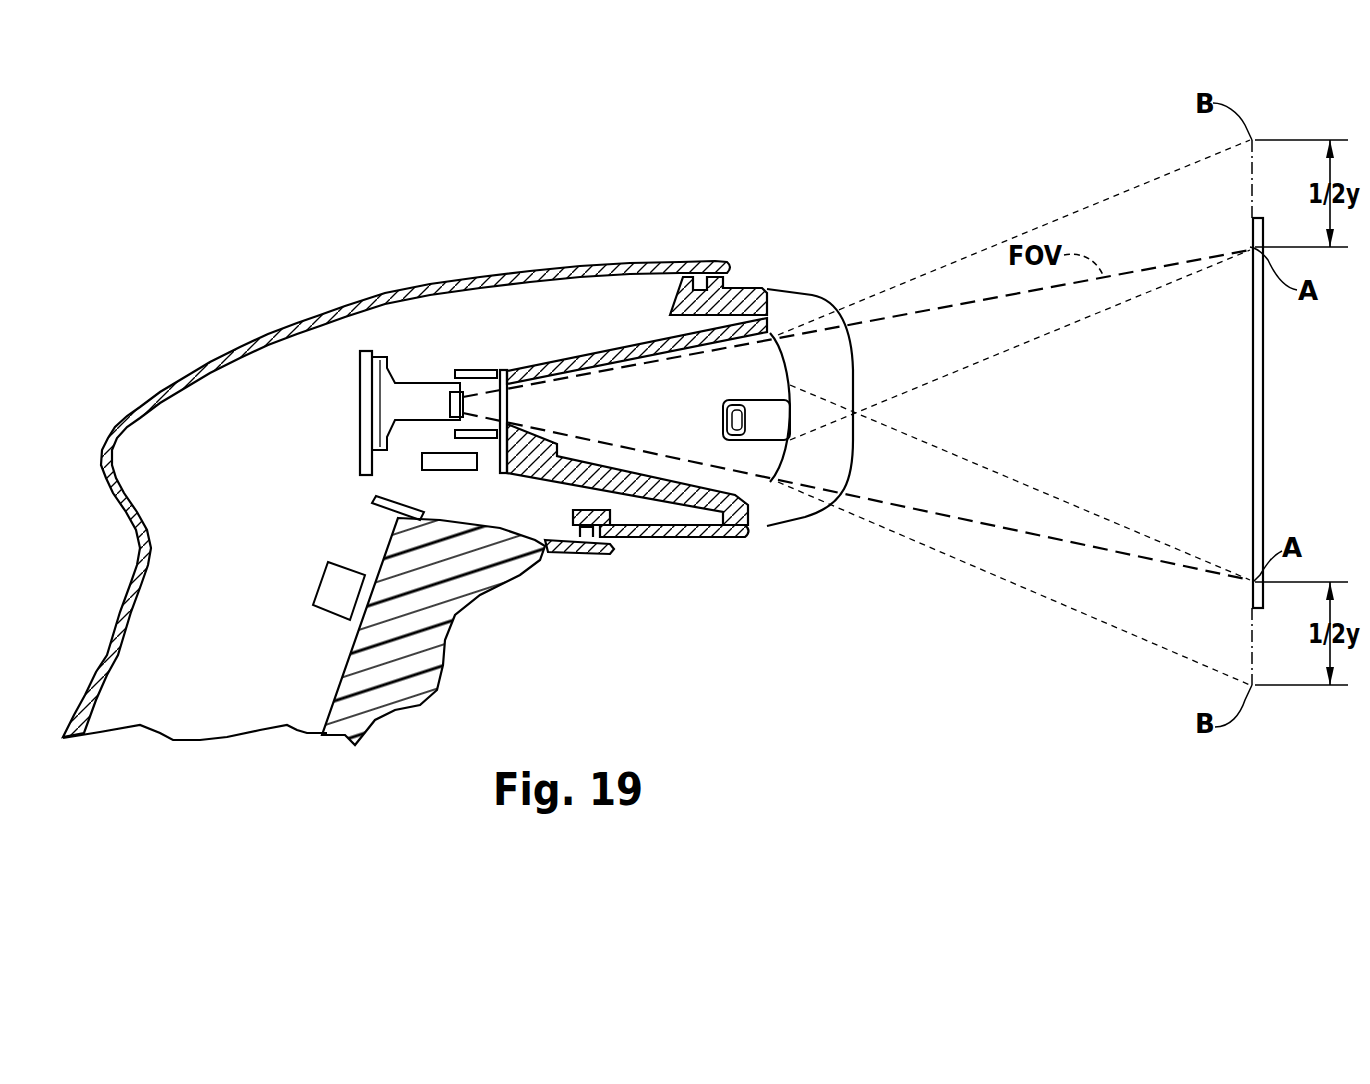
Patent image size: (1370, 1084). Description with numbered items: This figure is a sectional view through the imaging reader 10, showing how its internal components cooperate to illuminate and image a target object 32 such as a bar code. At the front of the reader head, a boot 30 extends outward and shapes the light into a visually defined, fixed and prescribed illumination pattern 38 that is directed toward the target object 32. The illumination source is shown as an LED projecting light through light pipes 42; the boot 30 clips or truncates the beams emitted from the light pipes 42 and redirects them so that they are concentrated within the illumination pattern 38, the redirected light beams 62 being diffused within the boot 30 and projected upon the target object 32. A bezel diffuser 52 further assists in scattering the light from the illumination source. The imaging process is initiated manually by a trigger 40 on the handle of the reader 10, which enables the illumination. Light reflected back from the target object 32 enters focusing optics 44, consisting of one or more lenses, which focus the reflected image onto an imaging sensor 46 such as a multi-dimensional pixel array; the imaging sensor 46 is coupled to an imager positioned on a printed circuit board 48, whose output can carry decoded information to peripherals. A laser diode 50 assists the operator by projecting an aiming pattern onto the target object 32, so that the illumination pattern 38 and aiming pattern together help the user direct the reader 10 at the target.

The imaging reader 10 is at (892, 186).
The boot 30 is at (805, 300).
The target object 32 is at (1262, 463).
The illumination pattern 38 is at (1113, 195).
The trigger 40 is at (425, 617).
The light pipes 42 is at (730, 403).
The focusing optics 44 is at (455, 405).
The imaging sensor 46 is at (378, 407).
The printed circuit board 48 is at (360, 362).
The laser diode 50 is at (457, 462).
The bezel diffuser 52 is at (740, 307).
The redirected light beams 62 is at (1027, 345).